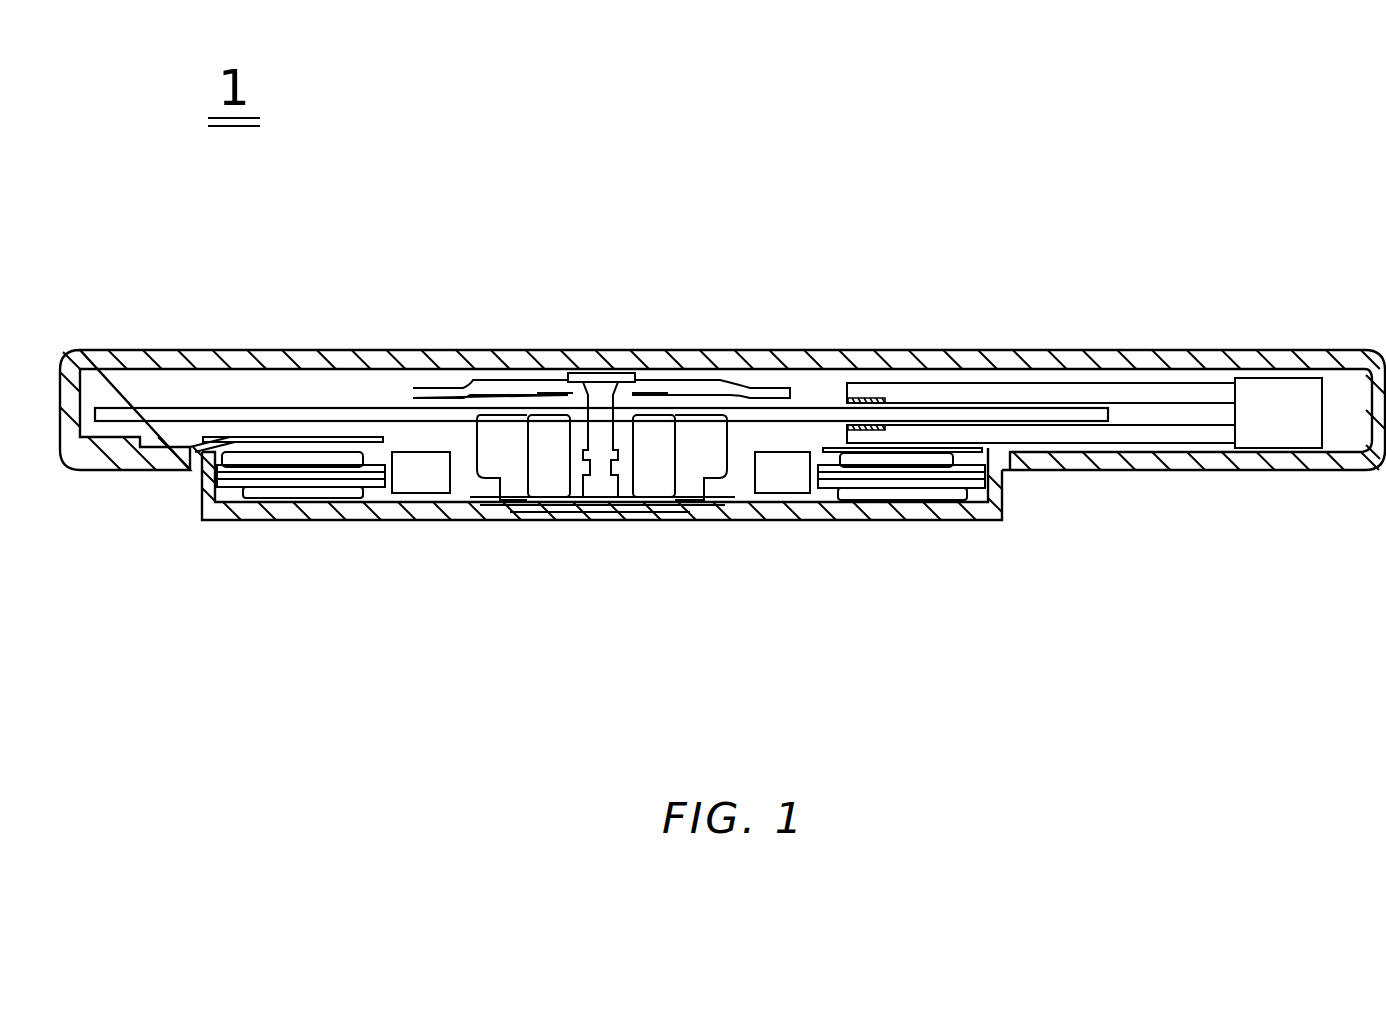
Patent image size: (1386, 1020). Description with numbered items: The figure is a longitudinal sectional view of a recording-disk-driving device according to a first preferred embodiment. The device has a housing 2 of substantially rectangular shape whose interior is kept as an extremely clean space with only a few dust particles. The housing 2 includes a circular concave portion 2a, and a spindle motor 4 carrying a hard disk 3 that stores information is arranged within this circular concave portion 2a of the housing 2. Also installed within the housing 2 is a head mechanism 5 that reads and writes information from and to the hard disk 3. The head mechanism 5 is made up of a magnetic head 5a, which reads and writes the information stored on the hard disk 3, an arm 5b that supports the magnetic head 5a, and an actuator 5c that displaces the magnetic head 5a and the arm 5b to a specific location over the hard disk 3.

The housing 2 is at (792, 357).
The circular concave portion 2a is at (370, 512).
The hard disk 3 is at (602, 523).
The spindle motor 4 is at (257, 414).
The head mechanism 5 is at (1098, 311).
The magnetic head 5a is at (890, 400).
The arm 5b is at (1033, 392).
The actuator 5c is at (1270, 415).